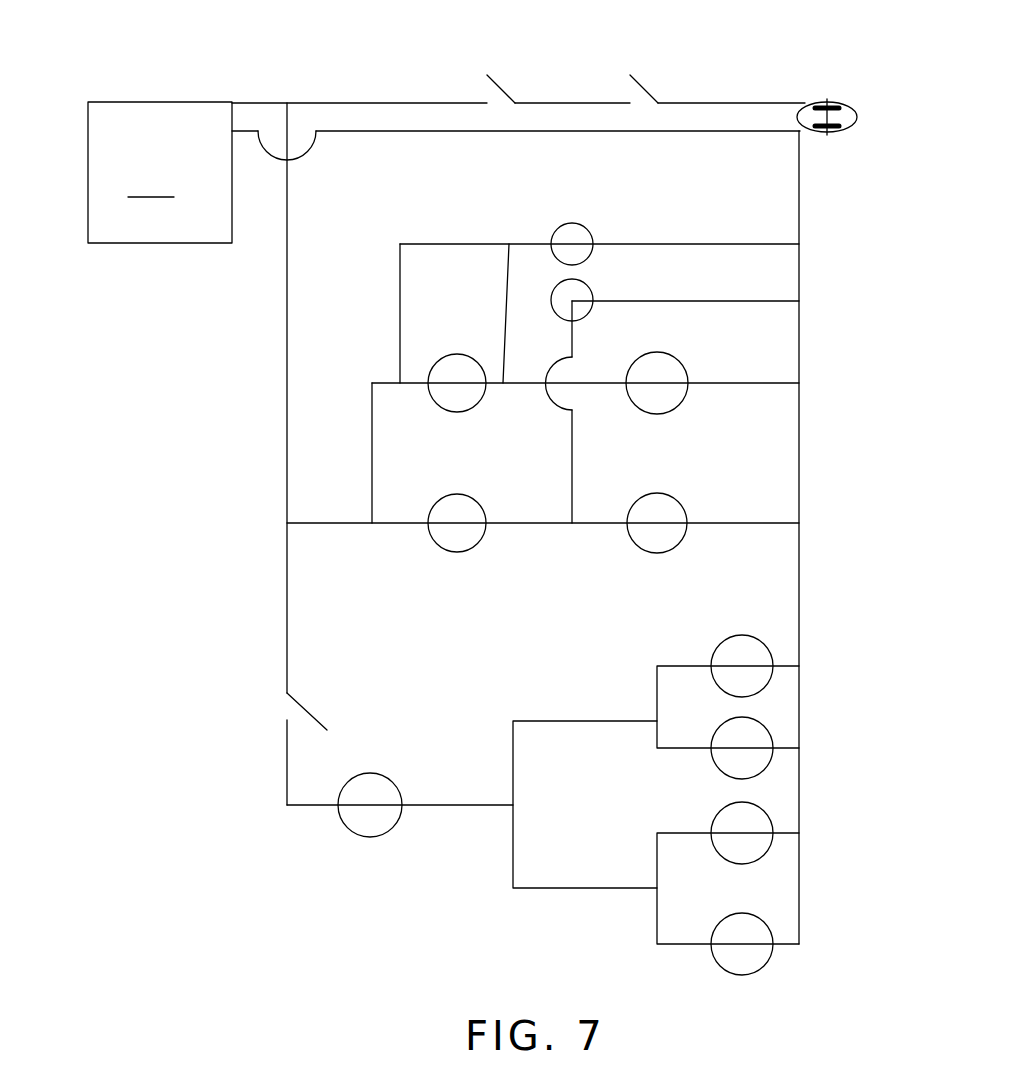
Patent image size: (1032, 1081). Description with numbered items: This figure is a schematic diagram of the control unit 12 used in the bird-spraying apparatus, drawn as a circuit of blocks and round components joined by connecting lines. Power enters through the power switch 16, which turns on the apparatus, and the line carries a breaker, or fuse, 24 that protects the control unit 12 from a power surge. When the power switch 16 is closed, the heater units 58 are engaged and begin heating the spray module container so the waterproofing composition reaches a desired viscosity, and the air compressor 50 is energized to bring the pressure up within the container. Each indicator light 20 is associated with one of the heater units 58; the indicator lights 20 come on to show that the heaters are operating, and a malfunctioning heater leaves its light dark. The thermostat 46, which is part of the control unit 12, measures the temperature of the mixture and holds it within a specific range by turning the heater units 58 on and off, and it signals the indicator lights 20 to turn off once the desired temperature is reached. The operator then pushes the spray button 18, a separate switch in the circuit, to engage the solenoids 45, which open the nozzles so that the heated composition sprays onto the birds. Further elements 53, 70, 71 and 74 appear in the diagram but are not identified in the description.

The control unit 12 is at (172, 613).
The power switch 16 is at (500, 86).
The spray button 18 is at (311, 708).
The indicator lights 20 is at (585, 228).
The breaker, or fuse 24 is at (650, 82).
The solenoids 45 is at (762, 635).
The thermostat 46 is at (452, 412).
The air compressor 50 is at (160, 172).
The pump 53 is at (360, 838).
The heater units 58 is at (672, 360).
The battery 70 is at (840, 100).
The conduit 71 is at (320, 103).
The return conduit 74 is at (568, 135).